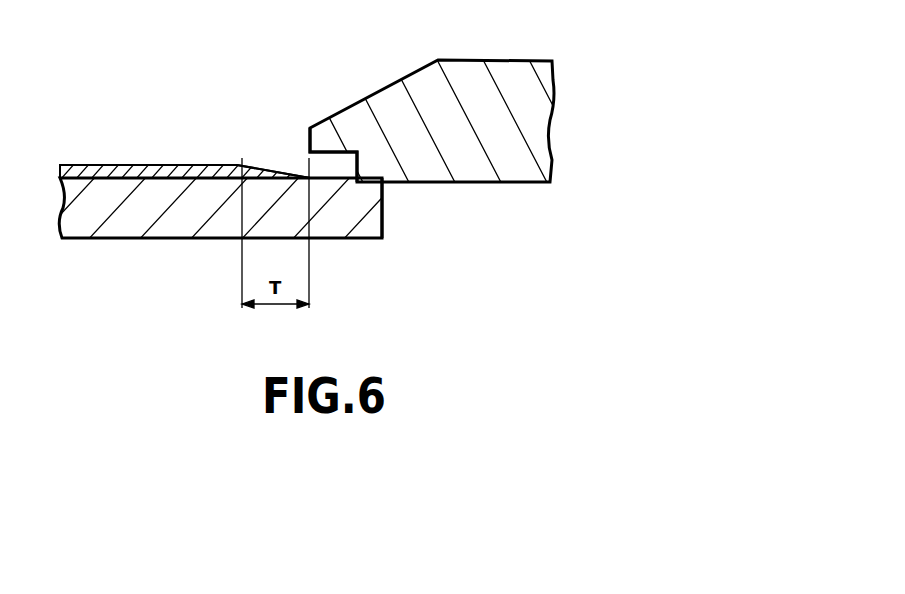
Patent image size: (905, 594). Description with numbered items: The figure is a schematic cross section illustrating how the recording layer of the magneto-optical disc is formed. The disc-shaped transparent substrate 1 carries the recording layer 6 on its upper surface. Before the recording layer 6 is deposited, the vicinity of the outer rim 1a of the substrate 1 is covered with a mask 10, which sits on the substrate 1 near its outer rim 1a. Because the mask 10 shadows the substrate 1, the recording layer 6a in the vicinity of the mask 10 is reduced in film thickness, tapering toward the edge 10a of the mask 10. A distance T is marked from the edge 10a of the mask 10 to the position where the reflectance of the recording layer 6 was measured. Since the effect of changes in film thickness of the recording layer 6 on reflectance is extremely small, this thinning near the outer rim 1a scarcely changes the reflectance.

The transparent substrate 1 is at (137, 206).
The outer rim of the substrate 1a is at (383, 210).
The recording layer 6 is at (117, 165).
The recording layer of reduced film thickness 6a is at (274, 157).
The mask 10 is at (487, 95).
The edge of the mask 10a is at (308, 129).